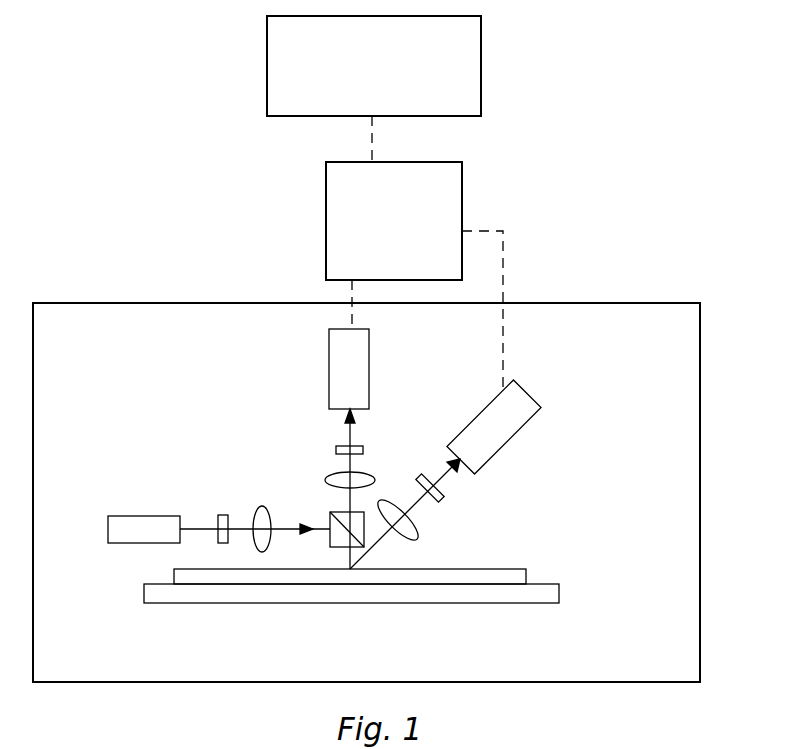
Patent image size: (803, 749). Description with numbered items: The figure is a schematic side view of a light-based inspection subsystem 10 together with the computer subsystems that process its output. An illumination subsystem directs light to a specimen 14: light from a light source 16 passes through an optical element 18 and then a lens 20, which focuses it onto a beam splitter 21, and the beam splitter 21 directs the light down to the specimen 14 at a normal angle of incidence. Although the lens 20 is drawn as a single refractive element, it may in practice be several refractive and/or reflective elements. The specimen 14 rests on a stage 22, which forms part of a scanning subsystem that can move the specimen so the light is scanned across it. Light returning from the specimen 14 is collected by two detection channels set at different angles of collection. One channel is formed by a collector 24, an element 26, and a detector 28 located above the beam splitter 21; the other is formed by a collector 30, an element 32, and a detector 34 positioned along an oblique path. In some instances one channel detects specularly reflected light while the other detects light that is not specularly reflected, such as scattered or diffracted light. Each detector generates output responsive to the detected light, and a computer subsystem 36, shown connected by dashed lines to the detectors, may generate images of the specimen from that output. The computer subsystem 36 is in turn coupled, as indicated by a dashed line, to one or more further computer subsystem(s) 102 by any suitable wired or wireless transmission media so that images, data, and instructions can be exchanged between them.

The inspection subsystem 10 is at (398, 487).
The computer subsystem(s) 102 is at (355, 106).
The computer subsystem 36 is at (381, 262).
The light source 16 is at (121, 515).
The optical element 18 is at (202, 513).
The lens 20 is at (259, 505).
The beam splitter 21 is at (325, 515).
The collector 24 is at (324, 468).
The element 26 is at (321, 436).
The detector 28 is at (320, 369).
The collector 30 is at (423, 530).
The element 32 is at (457, 501).
The detector 34 is at (513, 427).
The specimen 14 is at (323, 564).
The stage 22 is at (323, 586).